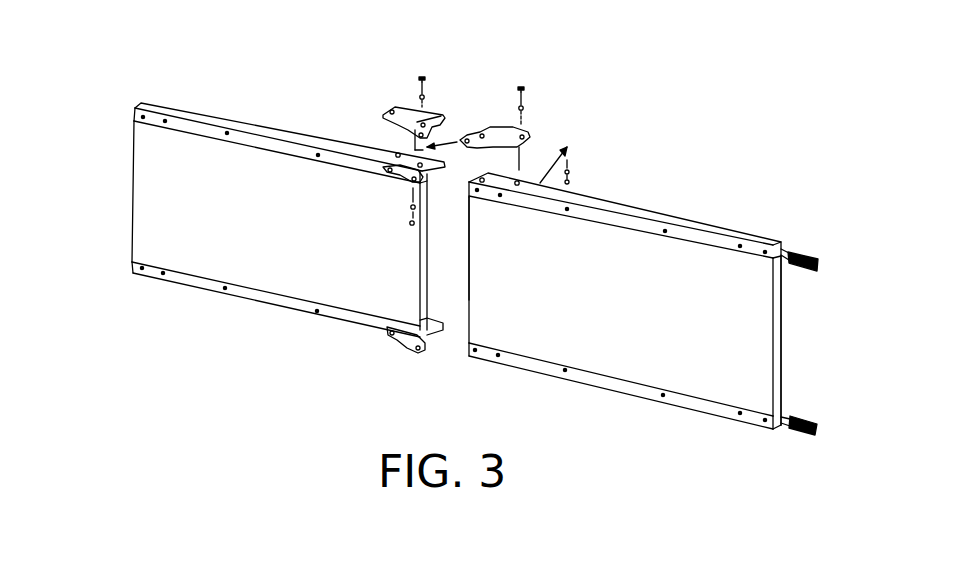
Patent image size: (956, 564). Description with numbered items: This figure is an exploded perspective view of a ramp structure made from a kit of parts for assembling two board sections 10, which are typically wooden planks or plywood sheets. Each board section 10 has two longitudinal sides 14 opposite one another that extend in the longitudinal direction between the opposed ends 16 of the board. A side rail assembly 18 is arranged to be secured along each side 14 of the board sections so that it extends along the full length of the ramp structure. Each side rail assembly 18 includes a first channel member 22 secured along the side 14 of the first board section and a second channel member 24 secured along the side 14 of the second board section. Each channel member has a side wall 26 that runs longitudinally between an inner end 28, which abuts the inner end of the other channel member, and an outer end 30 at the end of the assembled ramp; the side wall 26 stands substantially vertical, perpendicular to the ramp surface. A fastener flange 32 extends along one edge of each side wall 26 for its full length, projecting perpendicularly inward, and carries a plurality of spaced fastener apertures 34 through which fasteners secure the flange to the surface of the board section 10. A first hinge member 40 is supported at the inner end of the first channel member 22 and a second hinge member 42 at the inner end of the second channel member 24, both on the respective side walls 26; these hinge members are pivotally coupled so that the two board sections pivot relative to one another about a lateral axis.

The board section 10 is at (213, 237).
The longitudinal side 14 is at (640, 228).
The opposed end 16 is at (469, 266).
The side rail assembly 18 is at (118, 97).
The first channel member 22 is at (272, 300).
The second channel member 24 is at (708, 407).
The side wall 26 is at (612, 207).
The inner end 28 is at (482, 172).
The outer end 30 is at (762, 242).
The fastener flange 32 is at (702, 240).
The fastener aperture 34 is at (665, 228).
The first hinge member 40 is at (405, 113).
The second hinge member 42 is at (510, 133).